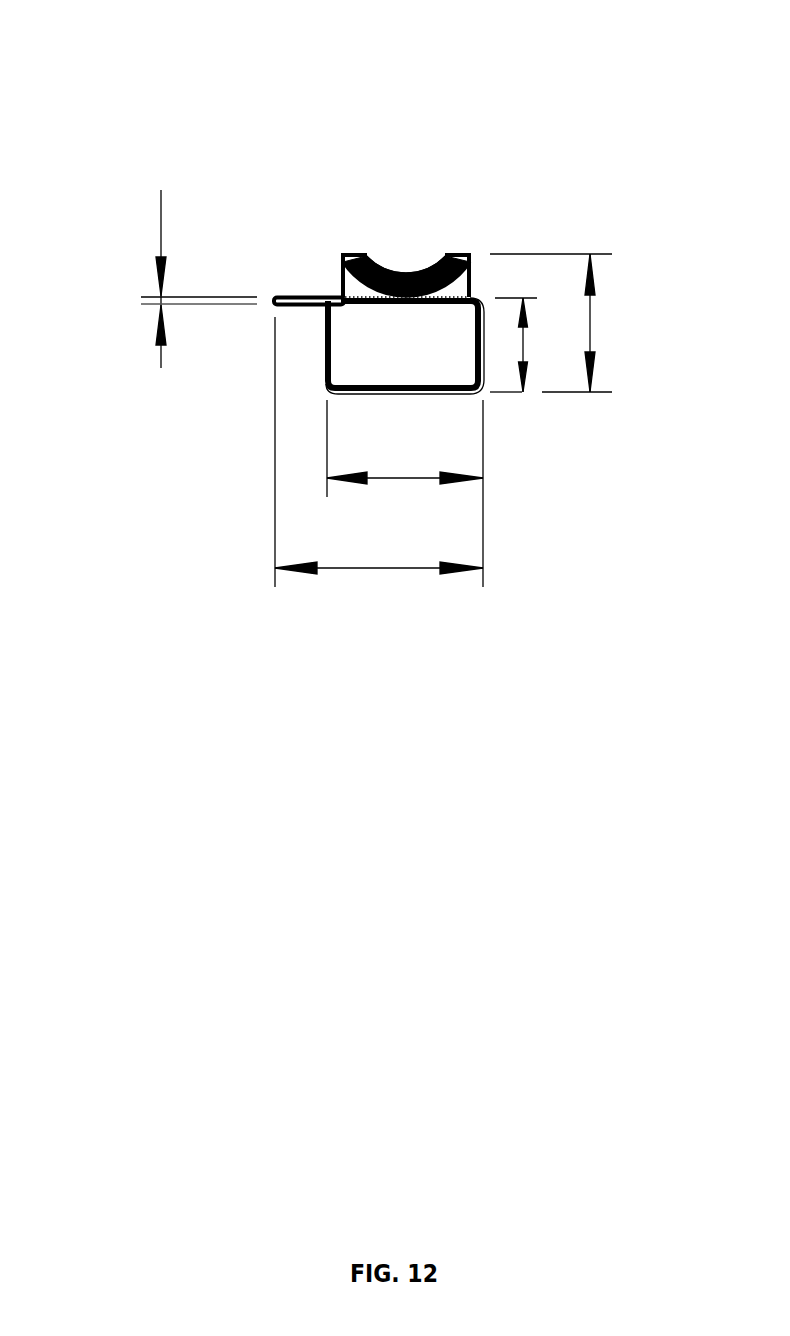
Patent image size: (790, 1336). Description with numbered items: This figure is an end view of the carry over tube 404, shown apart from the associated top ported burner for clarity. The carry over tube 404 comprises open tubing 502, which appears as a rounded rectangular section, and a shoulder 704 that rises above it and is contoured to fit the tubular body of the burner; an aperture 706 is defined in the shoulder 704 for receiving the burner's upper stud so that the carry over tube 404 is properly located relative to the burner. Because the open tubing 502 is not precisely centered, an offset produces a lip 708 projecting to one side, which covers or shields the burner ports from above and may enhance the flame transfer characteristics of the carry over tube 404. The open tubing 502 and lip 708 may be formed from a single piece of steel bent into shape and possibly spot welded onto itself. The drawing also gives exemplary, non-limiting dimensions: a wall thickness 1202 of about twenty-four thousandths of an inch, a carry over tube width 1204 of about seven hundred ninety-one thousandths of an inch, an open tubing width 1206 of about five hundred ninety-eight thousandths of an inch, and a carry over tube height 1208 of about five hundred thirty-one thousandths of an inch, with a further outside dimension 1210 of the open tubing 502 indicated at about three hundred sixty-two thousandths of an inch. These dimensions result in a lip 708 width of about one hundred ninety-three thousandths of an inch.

The carry over tube 404 is at (352, 248).
The open tubing 502 is at (478, 390).
The shoulder 704 is at (455, 253).
The aperture 706 is at (392, 263).
The lip 708 is at (305, 297).
The wall thickness 1202 is at (161, 238).
The carry over tube width 1204 is at (367, 568).
The open tubing width 1206 is at (402, 478).
The carry over tube height 1208 is at (592, 320).
The body height dimension 1210 is at (525, 348).